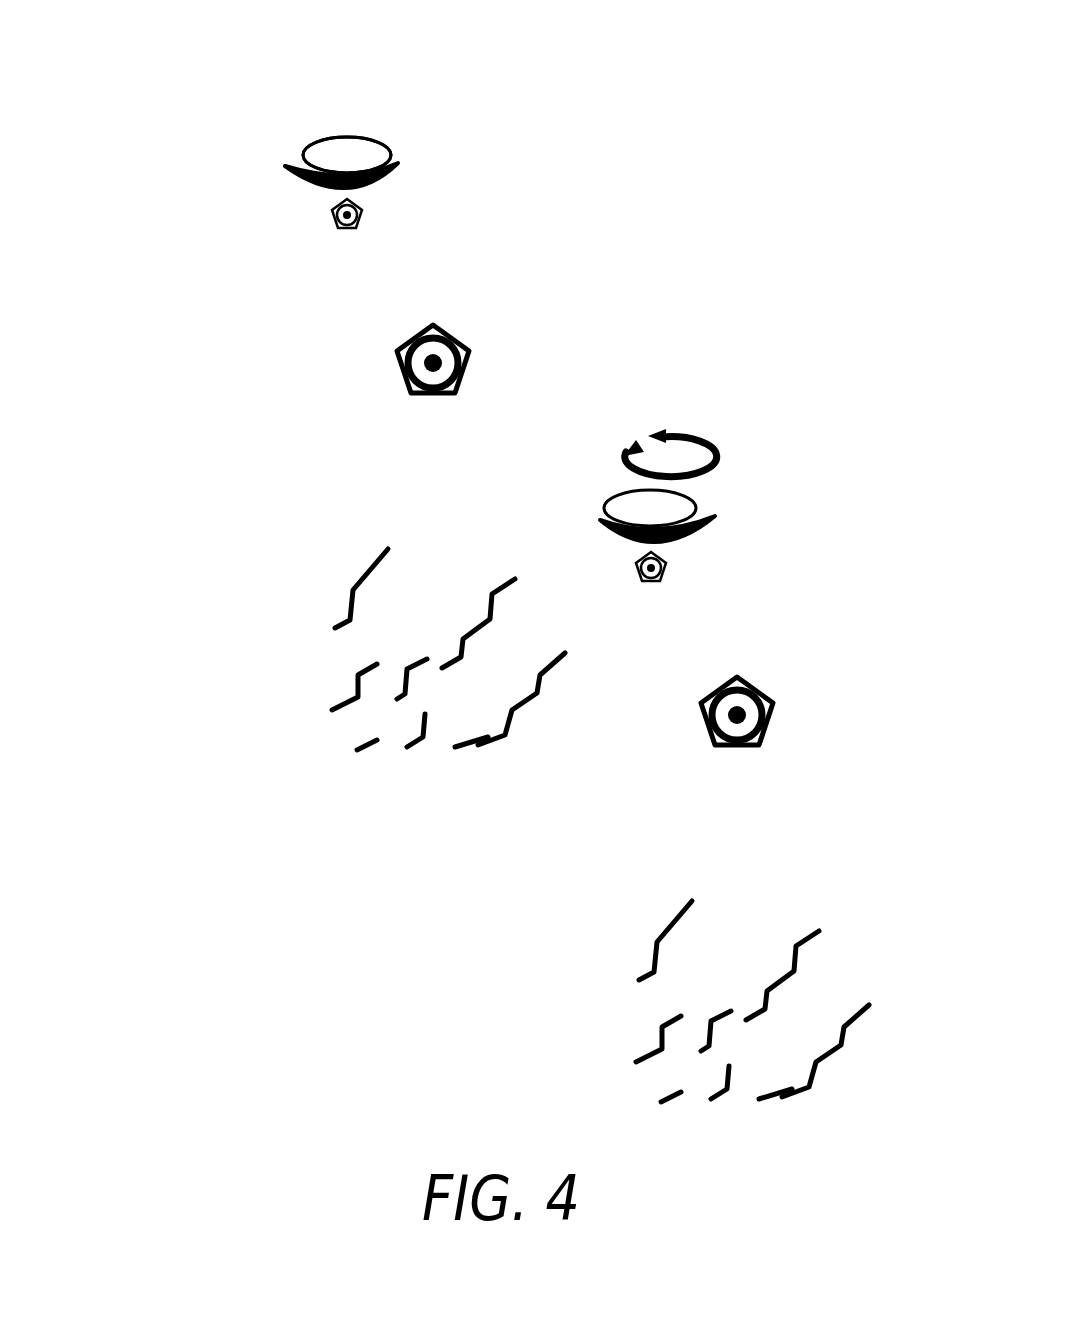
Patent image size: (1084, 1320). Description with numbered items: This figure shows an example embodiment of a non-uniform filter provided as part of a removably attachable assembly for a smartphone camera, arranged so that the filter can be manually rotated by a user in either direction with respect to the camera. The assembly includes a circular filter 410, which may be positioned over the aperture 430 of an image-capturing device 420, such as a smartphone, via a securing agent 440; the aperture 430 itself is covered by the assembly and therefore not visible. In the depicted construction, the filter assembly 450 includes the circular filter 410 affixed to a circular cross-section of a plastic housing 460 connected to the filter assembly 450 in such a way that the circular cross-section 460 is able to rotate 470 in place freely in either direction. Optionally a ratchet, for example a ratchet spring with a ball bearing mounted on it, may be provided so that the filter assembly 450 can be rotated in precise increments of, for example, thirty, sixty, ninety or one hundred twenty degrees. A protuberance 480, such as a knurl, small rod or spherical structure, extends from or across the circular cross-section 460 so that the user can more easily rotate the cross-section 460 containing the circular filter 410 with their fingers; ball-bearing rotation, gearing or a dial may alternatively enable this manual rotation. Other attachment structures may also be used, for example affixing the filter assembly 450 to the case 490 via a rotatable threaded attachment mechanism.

The circular filter 410 is at (338, 152).
The image-capturing device 420 is at (285, 421).
The aperture 430 is at (298, 244).
The securing agent 440 is at (413, 144).
The filter assembly 450 is at (306, 129).
The plastic housing 460 is at (410, 166).
The rotation 470 is at (722, 442).
The protuberance 480 is at (725, 517).
The case 490 is at (545, 351).